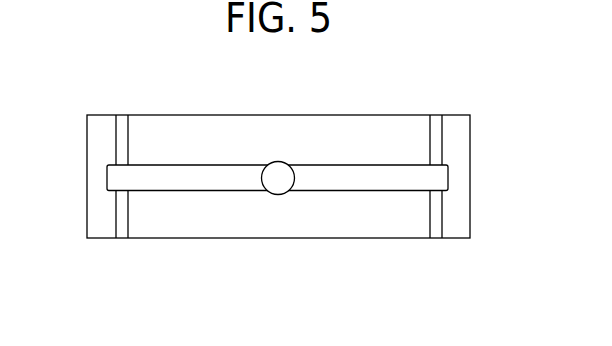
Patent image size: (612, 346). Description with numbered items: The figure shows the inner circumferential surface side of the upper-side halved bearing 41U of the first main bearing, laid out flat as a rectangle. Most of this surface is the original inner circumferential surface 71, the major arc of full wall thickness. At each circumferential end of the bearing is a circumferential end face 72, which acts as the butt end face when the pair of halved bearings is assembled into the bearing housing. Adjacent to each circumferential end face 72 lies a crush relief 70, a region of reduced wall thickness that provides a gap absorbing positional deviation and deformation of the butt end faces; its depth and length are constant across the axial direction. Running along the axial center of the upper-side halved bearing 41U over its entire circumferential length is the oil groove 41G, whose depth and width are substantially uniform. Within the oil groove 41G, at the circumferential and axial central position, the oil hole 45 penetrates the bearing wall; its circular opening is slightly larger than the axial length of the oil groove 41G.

The original inner circumferential surface 71 is at (362, 123).
The circumferential end face 72 is at (108, 232).
The crush relief 70 is at (125, 228).
The upper-side halved bearing 41U is at (200, 128).
The oil groove 41G is at (215, 173).
The oil hole 45 is at (278, 162).